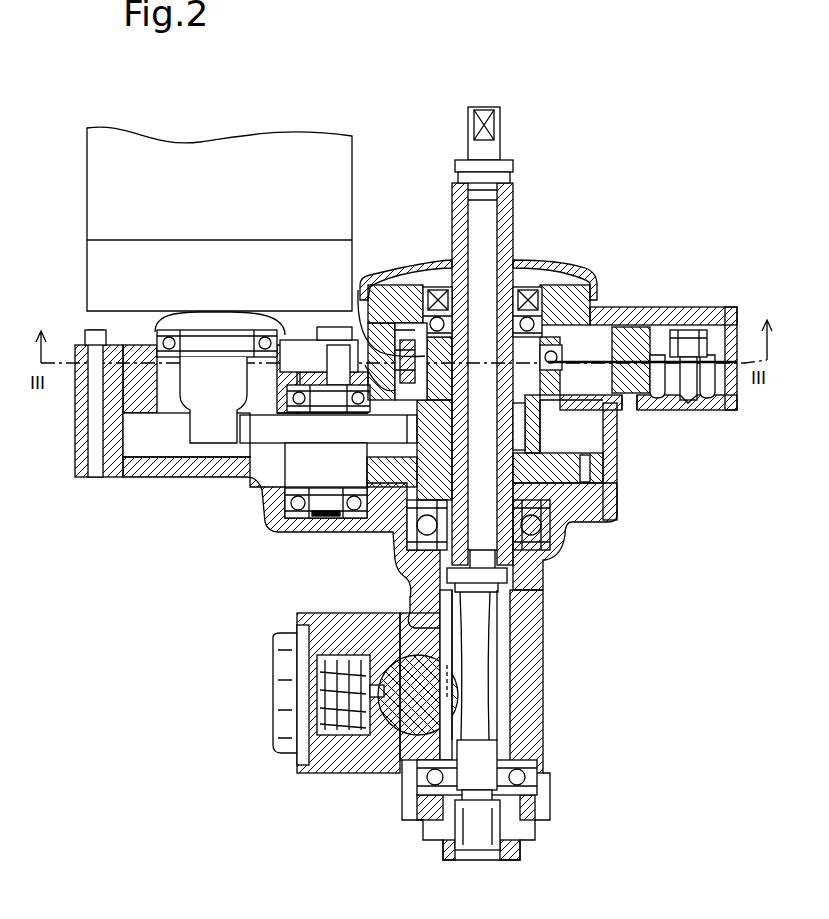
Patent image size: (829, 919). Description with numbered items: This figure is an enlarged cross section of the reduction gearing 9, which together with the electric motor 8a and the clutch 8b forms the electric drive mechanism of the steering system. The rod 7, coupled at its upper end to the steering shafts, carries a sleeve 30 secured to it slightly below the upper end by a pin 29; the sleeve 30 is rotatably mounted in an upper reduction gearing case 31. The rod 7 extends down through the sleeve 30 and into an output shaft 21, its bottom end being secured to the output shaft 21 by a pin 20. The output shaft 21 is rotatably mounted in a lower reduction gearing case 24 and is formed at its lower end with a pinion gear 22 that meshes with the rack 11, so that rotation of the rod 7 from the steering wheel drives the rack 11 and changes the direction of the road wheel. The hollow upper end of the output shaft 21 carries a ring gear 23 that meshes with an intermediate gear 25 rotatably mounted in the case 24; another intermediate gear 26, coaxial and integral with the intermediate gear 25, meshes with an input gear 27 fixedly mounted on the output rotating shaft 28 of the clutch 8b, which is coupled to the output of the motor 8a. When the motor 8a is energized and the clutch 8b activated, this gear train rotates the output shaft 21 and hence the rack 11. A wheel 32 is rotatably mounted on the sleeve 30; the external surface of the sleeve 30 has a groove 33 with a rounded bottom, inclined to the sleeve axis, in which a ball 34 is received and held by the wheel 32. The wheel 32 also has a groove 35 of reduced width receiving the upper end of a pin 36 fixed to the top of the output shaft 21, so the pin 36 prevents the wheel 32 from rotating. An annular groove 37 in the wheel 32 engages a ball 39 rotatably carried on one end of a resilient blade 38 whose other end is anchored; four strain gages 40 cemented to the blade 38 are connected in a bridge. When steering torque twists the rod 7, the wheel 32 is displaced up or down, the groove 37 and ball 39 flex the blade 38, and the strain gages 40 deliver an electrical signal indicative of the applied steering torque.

The rod 7 is at (500, 135).
The electric motor 8a is at (88, 183).
The clutch 8b is at (88, 272).
The reduction gearing 9 is at (68, 480).
The rack 11 is at (393, 768).
The pin 20 is at (507, 577).
The output shaft 21 is at (540, 558).
The pinion gear 22 is at (510, 710).
The ring gear 23 is at (593, 467).
The lower reduction gearing case 24 is at (322, 533).
The intermediate gear 25 is at (267, 510).
The intermediate gear 26 is at (253, 480).
The input gear 27 is at (177, 430).
The output rotating shaft 28 is at (208, 323).
The pin 29 is at (512, 172).
The sleeve 30 is at (515, 207).
The upper reduction gearing case 31 is at (605, 303).
The wheel 32 is at (402, 277).
The groove 33 is at (328, 451).
The ball 34 is at (370, 423).
The groove 35 is at (598, 420).
The pin 36 is at (527, 417).
The annular groove 37 is at (363, 320).
The resilient blade 38 is at (627, 357).
The ball 39 is at (557, 358).
The strain gages 40 is at (662, 345).